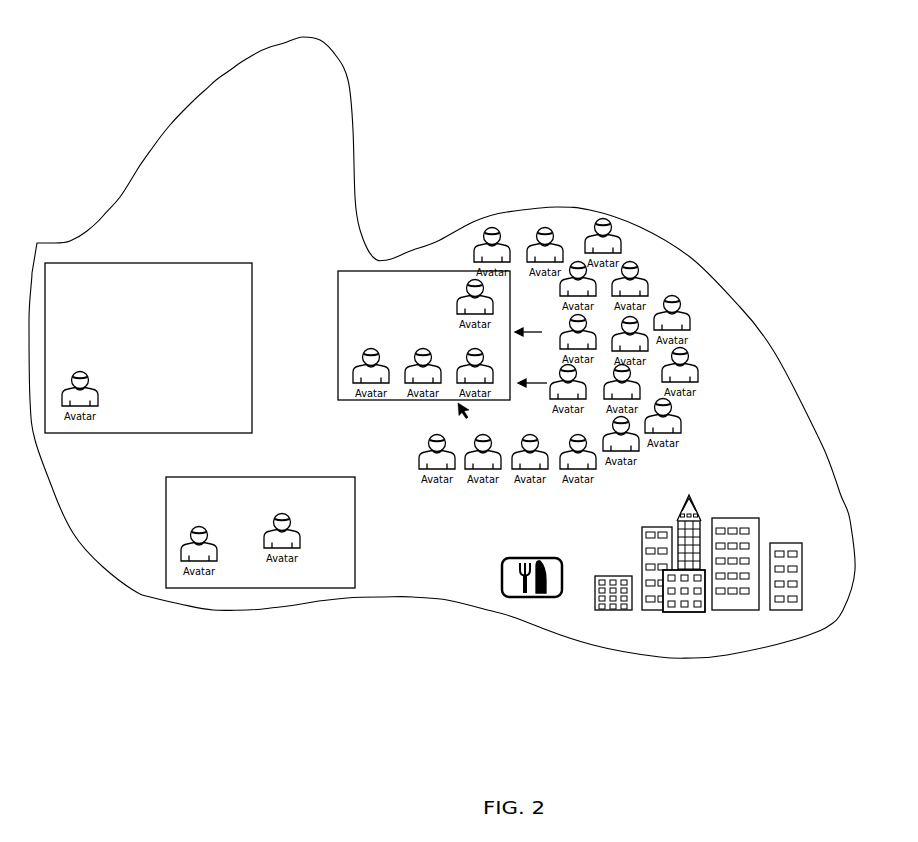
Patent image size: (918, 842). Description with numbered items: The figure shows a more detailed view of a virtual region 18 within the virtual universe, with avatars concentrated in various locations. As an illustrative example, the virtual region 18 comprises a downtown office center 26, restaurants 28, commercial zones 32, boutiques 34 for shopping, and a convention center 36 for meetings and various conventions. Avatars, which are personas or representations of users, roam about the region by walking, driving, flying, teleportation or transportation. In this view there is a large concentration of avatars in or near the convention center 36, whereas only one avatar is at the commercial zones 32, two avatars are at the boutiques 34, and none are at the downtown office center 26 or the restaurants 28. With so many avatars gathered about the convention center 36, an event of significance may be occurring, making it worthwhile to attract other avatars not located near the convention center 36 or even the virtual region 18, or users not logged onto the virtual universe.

The virtual region 18 is at (351, 90).
The commercial zones 32 is at (148, 262).
The boutiques 34 is at (166, 533).
The convention center 36 is at (420, 400).
The downtown office center 26 is at (748, 512).
The restaurants 28 is at (532, 598).